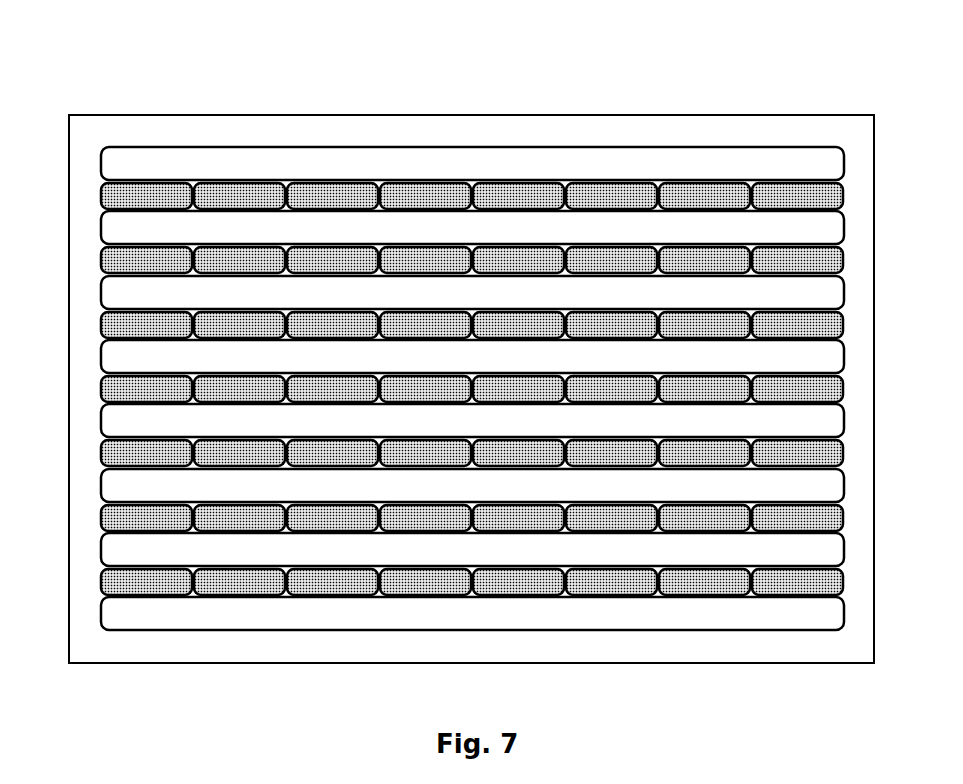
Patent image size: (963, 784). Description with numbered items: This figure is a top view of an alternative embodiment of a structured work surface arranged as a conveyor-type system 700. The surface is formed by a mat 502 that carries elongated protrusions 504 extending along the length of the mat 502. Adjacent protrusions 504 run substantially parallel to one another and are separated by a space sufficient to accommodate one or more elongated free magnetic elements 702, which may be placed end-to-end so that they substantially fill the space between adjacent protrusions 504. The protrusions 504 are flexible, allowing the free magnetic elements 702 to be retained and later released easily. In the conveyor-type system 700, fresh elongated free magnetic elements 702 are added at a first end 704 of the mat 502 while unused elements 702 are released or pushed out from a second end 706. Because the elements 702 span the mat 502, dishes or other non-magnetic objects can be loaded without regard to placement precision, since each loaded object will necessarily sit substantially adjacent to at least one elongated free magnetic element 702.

The conveyor-type system 700 is at (140, 67).
The mat 502 is at (245, 128).
The elongated protrusions 504 is at (383, 164).
The elongated free magnetic elements 702 is at (108, 196).
The first end 704 is at (68, 288).
The second end 706 is at (875, 289).